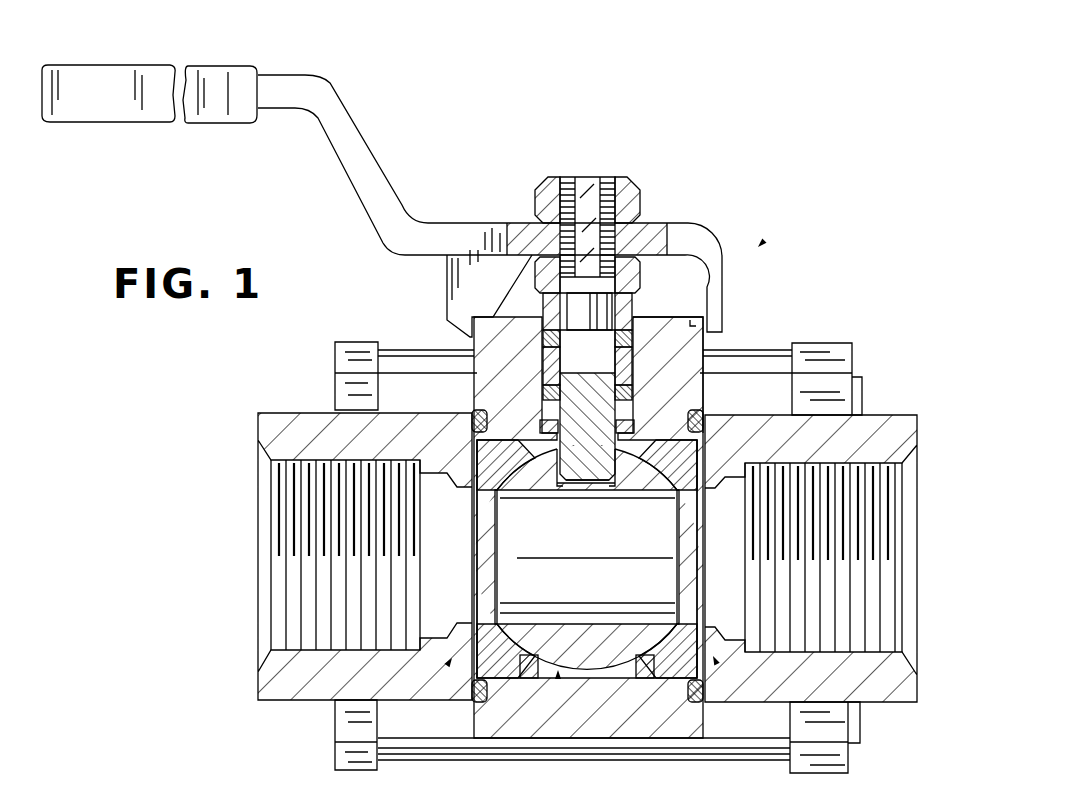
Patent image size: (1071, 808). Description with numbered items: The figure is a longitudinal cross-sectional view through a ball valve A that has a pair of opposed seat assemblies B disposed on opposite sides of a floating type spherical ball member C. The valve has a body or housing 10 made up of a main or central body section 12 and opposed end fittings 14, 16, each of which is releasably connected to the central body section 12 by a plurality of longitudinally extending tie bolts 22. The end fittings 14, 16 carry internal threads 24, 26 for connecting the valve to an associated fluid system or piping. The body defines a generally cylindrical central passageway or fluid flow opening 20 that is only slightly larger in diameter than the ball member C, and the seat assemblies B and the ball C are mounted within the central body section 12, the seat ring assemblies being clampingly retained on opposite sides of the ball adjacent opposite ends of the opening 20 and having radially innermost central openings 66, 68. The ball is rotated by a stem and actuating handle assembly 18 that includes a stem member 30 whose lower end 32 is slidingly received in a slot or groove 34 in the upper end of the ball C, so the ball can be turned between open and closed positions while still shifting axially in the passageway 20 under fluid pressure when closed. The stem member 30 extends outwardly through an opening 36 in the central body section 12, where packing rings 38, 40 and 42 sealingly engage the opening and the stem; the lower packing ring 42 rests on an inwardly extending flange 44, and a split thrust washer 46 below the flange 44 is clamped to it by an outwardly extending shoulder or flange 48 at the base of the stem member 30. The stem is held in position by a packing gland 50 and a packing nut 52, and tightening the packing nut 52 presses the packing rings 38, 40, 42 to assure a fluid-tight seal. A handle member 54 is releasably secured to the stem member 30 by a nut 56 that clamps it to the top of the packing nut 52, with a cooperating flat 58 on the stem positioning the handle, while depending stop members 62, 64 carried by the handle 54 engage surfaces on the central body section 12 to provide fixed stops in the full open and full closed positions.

The body or housing 10 is at (784, 326).
The main or central body section 12 is at (697, 344).
The end fitting 14 is at (322, 422).
The end fitting 16 is at (862, 427).
The stem and actuating handle assembly 18 is at (690, 200).
The central passageway or axially extending fluid flow opening 20 is at (618, 664).
The tie bolts 22 is at (857, 380).
The internal threads 24 is at (268, 557).
The internal threads 26 is at (890, 565).
The stem member 30 is at (572, 413).
The lower end of stem member 32 is at (590, 468).
The slot or groove 34 is at (573, 484).
The opening 36 is at (637, 355).
The packing ring 38 is at (548, 338).
The packing ring 40 is at (550, 363).
The lower packing ring 42 is at (548, 395).
The inwardly extending flange 44 is at (635, 408).
The split thrust washer 46 is at (626, 419).
The outwardly extending shoulder or flange 48 is at (620, 456).
The packing gland 50 is at (630, 303).
The packing nut 52 is at (628, 271).
The handle member 54 is at (368, 167).
The nut 56 is at (631, 194).
The cooperating flat 58 is at (583, 185).
The stop member 62 is at (465, 288).
The stop member 64 is at (710, 297).
The central opening of seat ring assembly 66 is at (486, 488).
The central opening of seat ring assembly 68 is at (678, 490).
The ball valve A is at (762, 243).
The seat assemblies B is at (716, 662).
The spherical ball member C is at (558, 676).